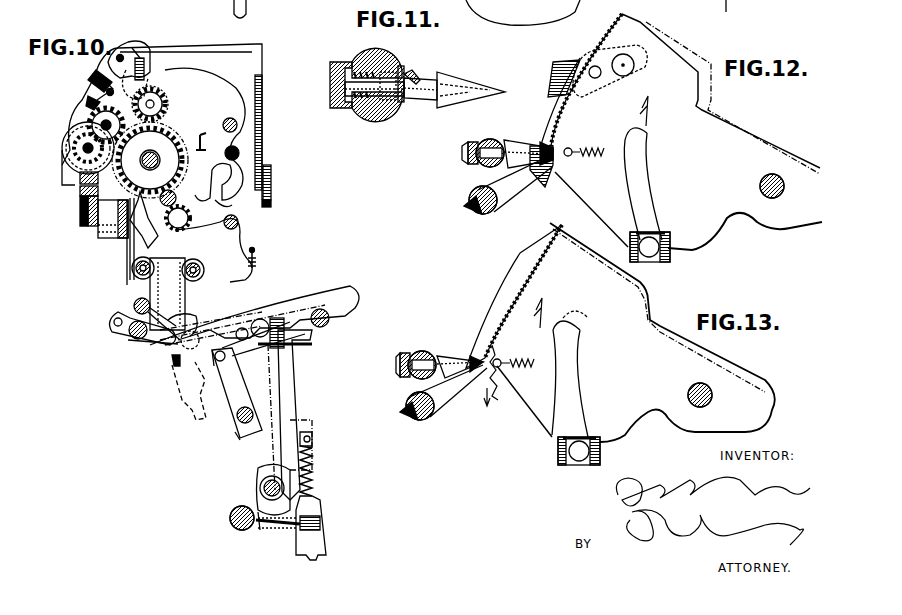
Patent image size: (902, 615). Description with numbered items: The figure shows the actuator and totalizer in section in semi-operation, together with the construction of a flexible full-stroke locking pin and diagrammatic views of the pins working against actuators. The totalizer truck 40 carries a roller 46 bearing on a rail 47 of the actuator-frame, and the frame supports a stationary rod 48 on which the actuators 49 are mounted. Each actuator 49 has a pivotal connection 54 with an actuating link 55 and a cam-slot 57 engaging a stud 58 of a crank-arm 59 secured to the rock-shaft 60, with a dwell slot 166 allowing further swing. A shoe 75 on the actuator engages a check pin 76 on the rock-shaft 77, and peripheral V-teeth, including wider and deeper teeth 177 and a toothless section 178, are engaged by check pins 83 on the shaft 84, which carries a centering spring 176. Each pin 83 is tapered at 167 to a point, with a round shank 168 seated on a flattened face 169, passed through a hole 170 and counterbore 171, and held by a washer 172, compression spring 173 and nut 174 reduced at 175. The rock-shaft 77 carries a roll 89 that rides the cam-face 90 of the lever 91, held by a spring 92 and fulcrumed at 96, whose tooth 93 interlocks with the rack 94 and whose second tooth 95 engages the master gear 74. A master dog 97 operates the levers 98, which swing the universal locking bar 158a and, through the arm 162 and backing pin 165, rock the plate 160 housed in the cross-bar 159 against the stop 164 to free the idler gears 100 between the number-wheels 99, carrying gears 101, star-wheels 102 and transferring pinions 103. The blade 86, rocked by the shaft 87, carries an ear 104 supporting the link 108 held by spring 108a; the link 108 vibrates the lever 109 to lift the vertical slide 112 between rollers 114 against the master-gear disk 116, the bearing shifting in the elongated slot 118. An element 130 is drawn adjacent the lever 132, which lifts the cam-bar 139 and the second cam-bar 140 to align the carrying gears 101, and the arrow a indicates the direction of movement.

In FIG. 10, the truck 40 is at (263, 100).
In FIG. 10, the roller 46 is at (86, 228).
In FIG. 10, the rail 47 is at (104, 205).
In FIG. 12, the stationary rod 48 is at (782, 196).
In FIG. 13, the stationary rod 48 is at (710, 400).
In FIG. 10, the actuator 49 is at (330, 290).
In FIG. 12, the actuator 49 is at (728, 108).
In FIG. 13, the actuator 49 is at (662, 332).
In FIG. 10, the pivotal connection 54 is at (258, 346).
In FIG. 10, the actuating link 55 is at (323, 548).
In FIG. 12, the cam-slot 57 is at (654, 192).
In FIG. 13, the cam-slot 57 is at (582, 398).
In FIG. 10, the stud 58 is at (258, 380).
In FIG. 12, the stud 58 is at (670, 236).
In FIG. 13, the stud 58 is at (600, 458).
In FIG. 10, the crank-arm 59 is at (238, 434).
In FIG. 12, the crank-arm 59 is at (662, 258).
In FIG. 13, the crank-arm 59 is at (564, 462).
In FIG. 10, the rock-shaft 60 is at (246, 425).
In FIG. 10, the master gear 74 is at (177, 203).
In FIG. 10, the tongue or shoe 75 is at (178, 385).
In FIG. 12, the tongue or shoe 75 is at (550, 78).
In FIG. 13, the tongue or shoe 75 is at (492, 290).
In FIG. 10, the check pin 76 is at (140, 345).
In FIG. 12, the check pin 76 is at (512, 185).
In FIG. 13, the check pin 76 is at (448, 396).
In FIG. 10, the rock-shaft 77 is at (125, 335).
In FIG. 12, the rock-shaft 77 is at (480, 200).
In FIG. 13, the rock-shaft 77 is at (420, 420).
In FIG. 10, the pawl or check pin 83 is at (166, 342).
In FIG. 11, the pawl or check pin 83 is at (471, 90).
In FIG. 12, the pawl or check pin 83 is at (522, 142).
In FIG. 13, the pawl or check pin 83 is at (447, 356).
In FIG. 10, the shaft 84 is at (134, 303).
In FIG. 11, the shaft 84 is at (396, 110).
In FIG. 12, the shaft 84 is at (490, 140).
In FIG. 13, the shaft 84 is at (424, 351).
In FIG. 10, the blade 86 is at (258, 530).
In FIG. 10, the shaft 87 is at (236, 526).
In FIG. 10, the roll 89 is at (186, 316).
In FIG. 10, the cam-face 90 is at (204, 310).
In FIG. 10, the lever 91 is at (204, 283).
In FIG. 10, the spring 92 is at (258, 265).
In FIG. 10, the tooth 93 is at (272, 207).
In FIG. 10, the rack 94 is at (272, 182).
In FIG. 10, the second tooth 95 is at (205, 264).
In FIG. 10, the fulcrum 96 is at (236, 232).
In FIG. 10, the master dog 97 is at (222, 204).
In FIG. 10, the lever 98 is at (214, 96).
In FIG. 10, the number-wheel 99 is at (72, 172).
In FIG. 10, the idler gear 100 is at (116, 132).
In FIG. 10, the carrying gear 101 is at (150, 160).
In FIG. 10, the star-wheel 102 is at (167, 104).
In FIG. 10, the carry-over or transferring pinion 103 is at (168, 112).
In FIG. 10, the ear 104 is at (288, 534).
In FIG. 10, the link 108 is at (297, 388).
In FIG. 10, the spring 108a is at (313, 462).
In FIG. 10, the lever 109 is at (250, 302).
In FIG. 10, the vertical slide 112 is at (171, 294).
In FIG. 10, the roller 114 is at (158, 270).
In FIG. 10, the master-gear disk 116 is at (183, 228).
In FIG. 10, the elongated slot 118 is at (256, 495).
In FIG. 10, the rod 130 is at (126, 276).
In FIG. 10, the lever 132 is at (130, 248).
In FIG. 10, the cam-bar 139 is at (157, 220).
In FIG. 10, the second cam-bar 140 is at (150, 160).
In FIG. 10, the universal locking bar 158a is at (138, 50).
In FIG. 10, the cross-bar 159 is at (96, 76).
In FIG. 10, the plate 160 is at (88, 104).
In FIG. 10, the arm 162 is at (156, 76).
In FIG. 10, the stop 164 is at (97, 92).
In FIG. 10, the backing pin 165 is at (147, 58).
In FIG. 12, the dwell slot 166 is at (649, 130).
In FIG. 11, the tapered sides 167 is at (455, 80).
In FIG. 11, the round shank 168 is at (376, 110).
In FIG. 11, the flattened face 169 is at (410, 72).
In FIG. 11, the hole 170 is at (426, 80).
In FIG. 11, the counterbore 171 is at (376, 62).
In FIG. 11, the washer 172 is at (403, 104).
In FIG. 11, the compression spring 173 is at (356, 70).
In FIG. 11, the nut 174 is at (330, 70).
In FIG. 12, the nut 174 is at (466, 156).
In FIG. 13, the nut 174 is at (400, 356).
In FIG. 11, the reduced portion 175 is at (352, 105).
In FIG. 12, the centering spring 176 is at (592, 158).
In FIG. 13, the centering spring 176 is at (520, 370).
In FIG. 12, the wider and deeper teeth 177 is at (568, 92).
In FIG. 13, the wider and deeper teeth 177 is at (512, 290).
In FIG. 12, the section devoid of teeth 178 is at (550, 178).
In FIG. 13, the section devoid of teeth 178 is at (494, 352).
In FIG. 13, the direction arrow a is at (494, 400).